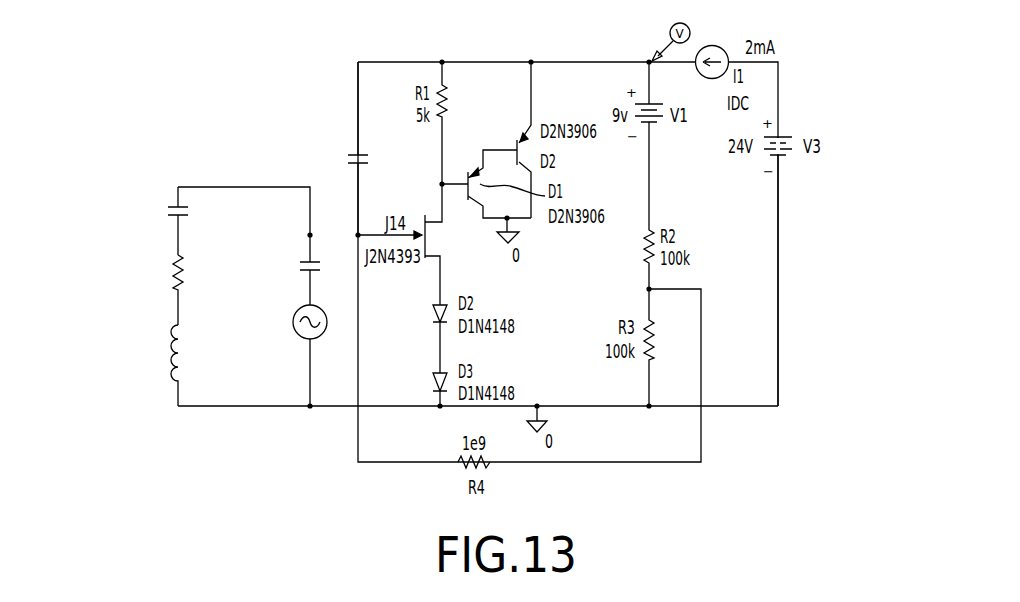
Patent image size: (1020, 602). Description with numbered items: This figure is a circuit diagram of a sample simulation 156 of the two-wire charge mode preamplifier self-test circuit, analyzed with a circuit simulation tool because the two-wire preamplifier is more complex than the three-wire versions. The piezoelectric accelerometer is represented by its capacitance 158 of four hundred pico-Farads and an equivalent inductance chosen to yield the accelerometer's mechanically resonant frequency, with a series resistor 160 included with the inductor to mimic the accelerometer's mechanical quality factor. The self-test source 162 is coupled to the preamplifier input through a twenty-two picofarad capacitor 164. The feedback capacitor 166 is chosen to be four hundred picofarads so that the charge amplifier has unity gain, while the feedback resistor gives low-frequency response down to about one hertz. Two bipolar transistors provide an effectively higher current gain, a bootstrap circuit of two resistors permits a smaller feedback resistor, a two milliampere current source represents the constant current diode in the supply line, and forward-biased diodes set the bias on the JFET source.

The sample simulation 156 is at (148, 167).
The capacitance 158 is at (172, 222).
The series resistor 160 is at (170, 275).
The self-test source 162 is at (295, 335).
The 22-pF capacitor 164 is at (312, 257).
The feedback capacitor 166 is at (355, 150).